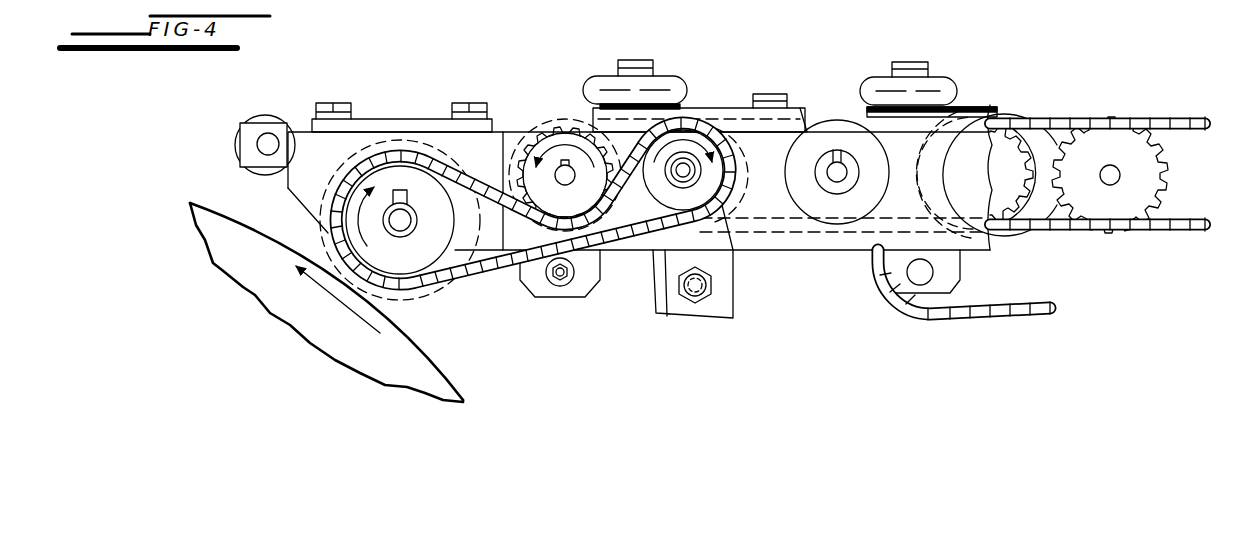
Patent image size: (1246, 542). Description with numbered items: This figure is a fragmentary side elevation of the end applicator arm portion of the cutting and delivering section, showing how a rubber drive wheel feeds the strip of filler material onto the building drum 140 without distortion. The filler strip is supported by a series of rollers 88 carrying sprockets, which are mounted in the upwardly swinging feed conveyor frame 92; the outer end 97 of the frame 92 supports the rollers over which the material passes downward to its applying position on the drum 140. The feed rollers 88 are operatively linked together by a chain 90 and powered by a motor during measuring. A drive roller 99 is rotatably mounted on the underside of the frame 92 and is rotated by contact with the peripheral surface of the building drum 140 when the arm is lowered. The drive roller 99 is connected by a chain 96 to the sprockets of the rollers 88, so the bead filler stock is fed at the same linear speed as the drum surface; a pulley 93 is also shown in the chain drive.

The rollers 88 is at (565, 130).
The chain 90 is at (1165, 230).
The feed conveyor frame 92 is at (800, 252).
The drive pulley 93 is at (706, 140).
The chain 96 is at (477, 270).
The outer end 97 is at (690, 104).
The drive roller 99 is at (437, 297).
The building drum 140 is at (473, 366).